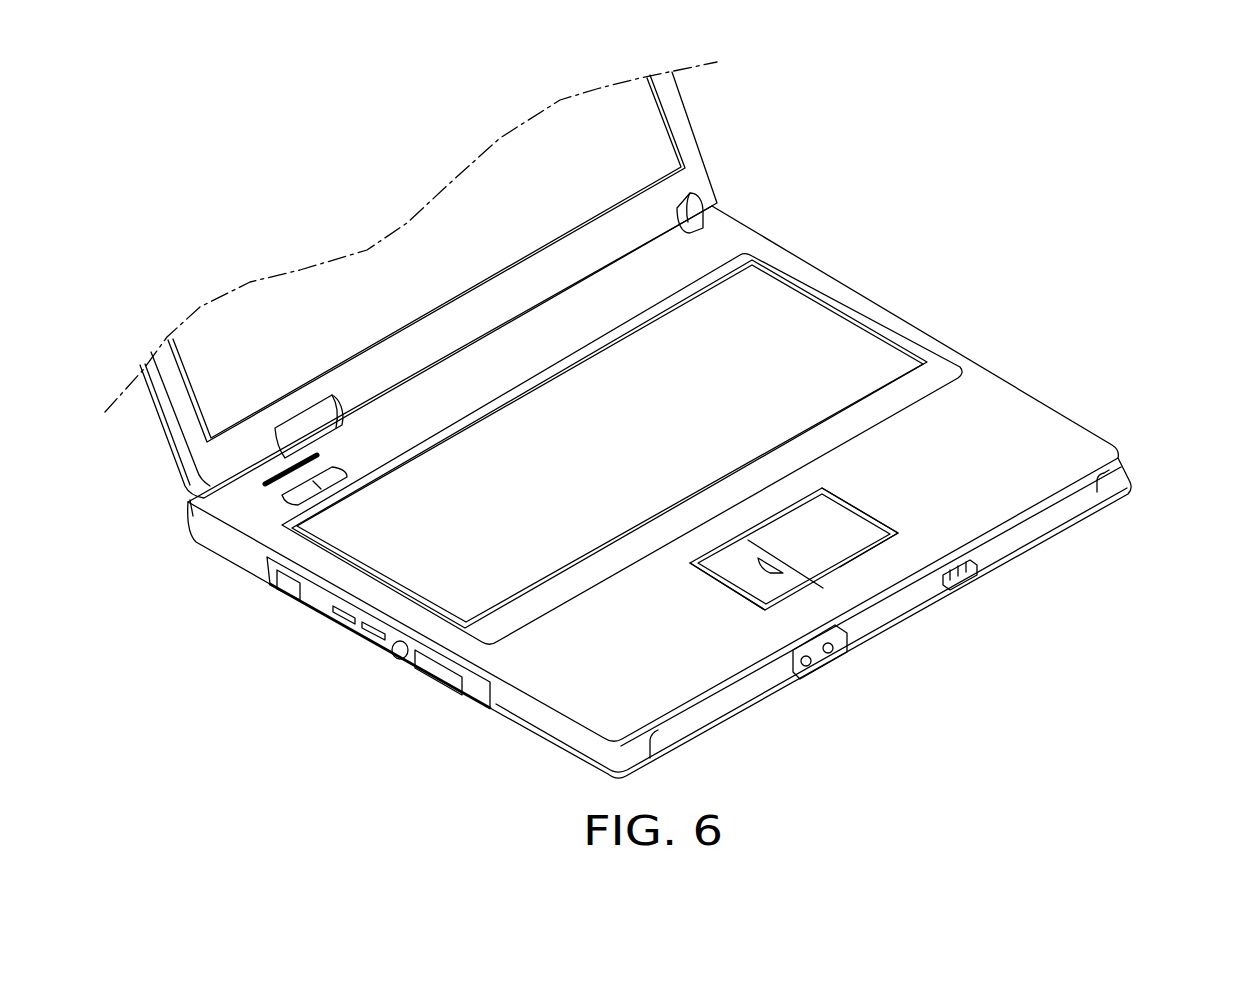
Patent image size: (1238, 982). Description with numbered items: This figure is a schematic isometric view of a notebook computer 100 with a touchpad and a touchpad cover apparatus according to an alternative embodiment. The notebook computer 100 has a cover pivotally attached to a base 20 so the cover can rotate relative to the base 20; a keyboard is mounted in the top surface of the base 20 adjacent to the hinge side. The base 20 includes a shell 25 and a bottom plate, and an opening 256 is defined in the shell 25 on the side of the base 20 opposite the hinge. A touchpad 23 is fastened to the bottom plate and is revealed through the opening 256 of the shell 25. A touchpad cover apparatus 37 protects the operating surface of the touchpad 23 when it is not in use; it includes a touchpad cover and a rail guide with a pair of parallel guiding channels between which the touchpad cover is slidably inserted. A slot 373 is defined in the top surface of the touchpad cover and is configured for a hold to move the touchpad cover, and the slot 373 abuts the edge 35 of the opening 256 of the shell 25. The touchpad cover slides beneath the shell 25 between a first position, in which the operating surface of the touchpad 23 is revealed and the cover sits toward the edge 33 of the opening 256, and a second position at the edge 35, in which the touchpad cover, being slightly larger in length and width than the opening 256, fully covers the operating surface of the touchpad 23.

The notebook computer 100 is at (820, 63).
The base 20 is at (1186, 402).
The touchpad 23 is at (820, 533).
The shell 25 is at (1060, 457).
The opening 256 is at (780, 513).
The edge 33 is at (730, 593).
The edge 35 is at (880, 520).
The touchpad cover apparatus 37 is at (770, 575).
The slot 373 is at (723, 547).